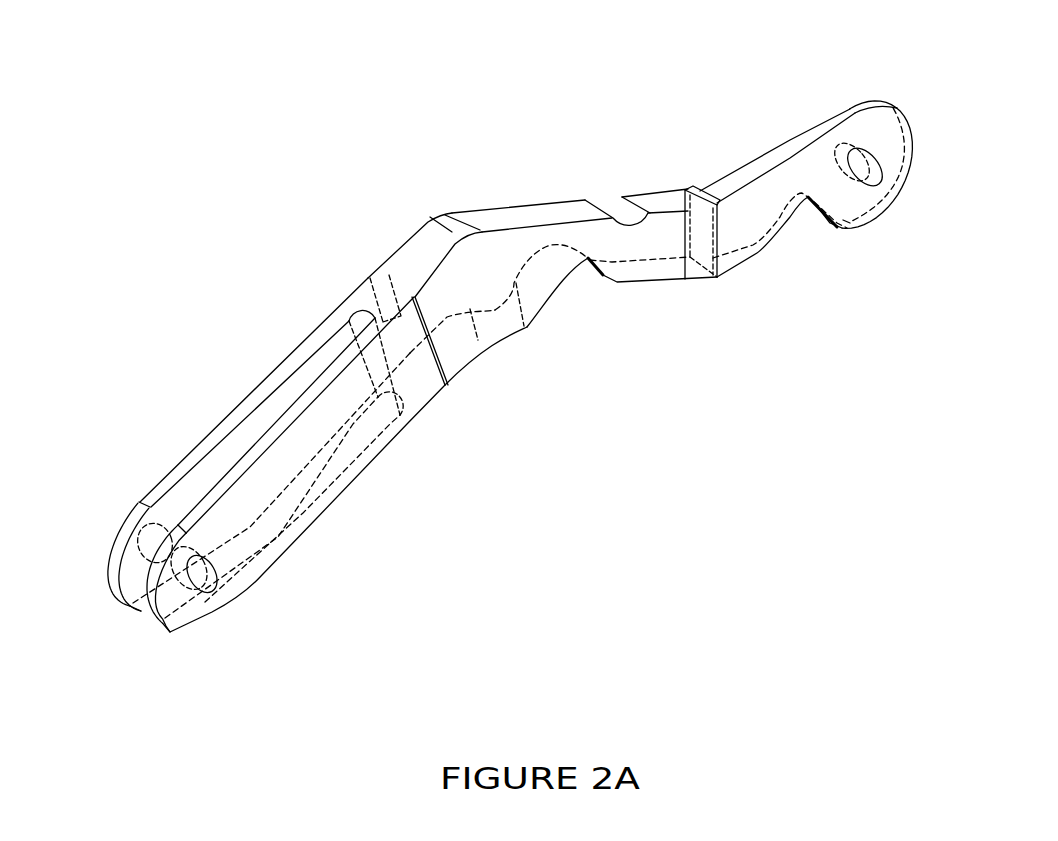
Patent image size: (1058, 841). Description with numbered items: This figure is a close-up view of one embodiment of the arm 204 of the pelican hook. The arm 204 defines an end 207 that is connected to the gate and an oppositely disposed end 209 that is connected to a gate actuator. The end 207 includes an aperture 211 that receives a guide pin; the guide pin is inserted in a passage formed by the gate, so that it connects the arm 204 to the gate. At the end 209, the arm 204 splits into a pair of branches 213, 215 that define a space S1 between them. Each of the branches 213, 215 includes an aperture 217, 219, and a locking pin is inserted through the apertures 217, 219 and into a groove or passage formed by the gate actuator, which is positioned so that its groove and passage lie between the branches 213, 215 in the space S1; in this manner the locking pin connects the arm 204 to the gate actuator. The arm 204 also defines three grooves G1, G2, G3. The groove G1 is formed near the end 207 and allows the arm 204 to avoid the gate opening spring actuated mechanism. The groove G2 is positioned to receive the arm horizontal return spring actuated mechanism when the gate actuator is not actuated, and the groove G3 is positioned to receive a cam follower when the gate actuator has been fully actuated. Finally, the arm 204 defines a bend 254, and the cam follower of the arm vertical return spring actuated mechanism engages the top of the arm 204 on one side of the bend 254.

The arm 204 is at (556, 82).
The end 207 is at (850, 109).
The end 209 is at (228, 415).
The aperture 211 is at (850, 175).
The branch 213 is at (300, 347).
The branch 215 is at (300, 408).
The aperture 217 is at (150, 566).
The aperture 219 is at (196, 576).
The bend 254 is at (455, 232).
The space S1 is at (220, 448).
The groove G1 is at (788, 210).
The groove G2 is at (573, 273).
The groove G3 is at (612, 215).